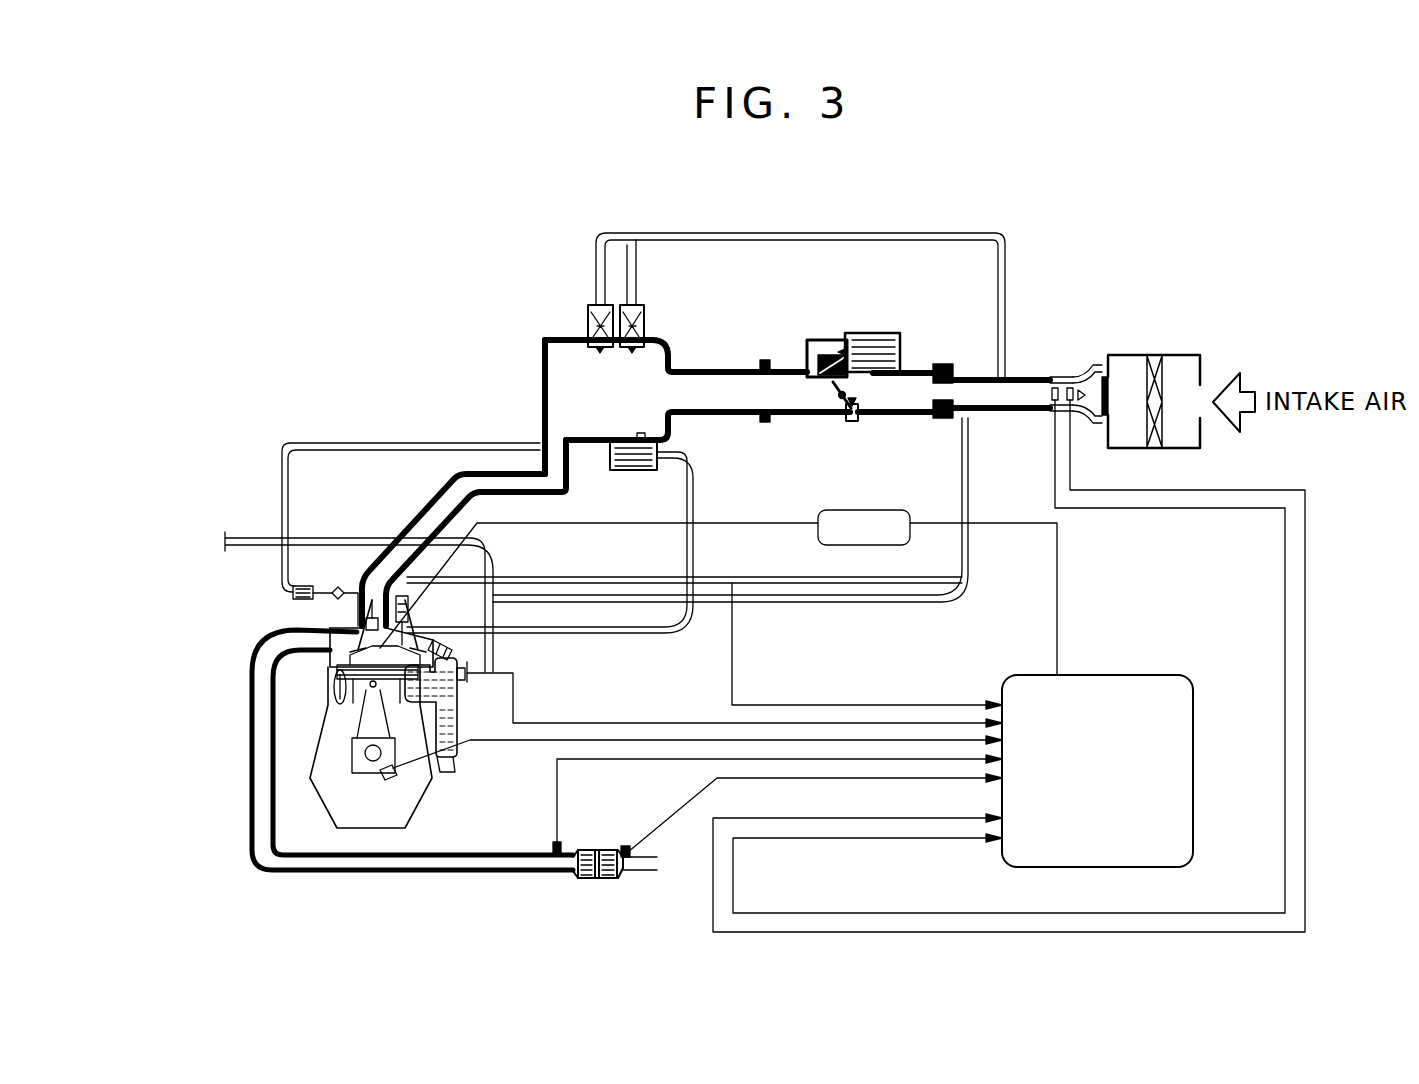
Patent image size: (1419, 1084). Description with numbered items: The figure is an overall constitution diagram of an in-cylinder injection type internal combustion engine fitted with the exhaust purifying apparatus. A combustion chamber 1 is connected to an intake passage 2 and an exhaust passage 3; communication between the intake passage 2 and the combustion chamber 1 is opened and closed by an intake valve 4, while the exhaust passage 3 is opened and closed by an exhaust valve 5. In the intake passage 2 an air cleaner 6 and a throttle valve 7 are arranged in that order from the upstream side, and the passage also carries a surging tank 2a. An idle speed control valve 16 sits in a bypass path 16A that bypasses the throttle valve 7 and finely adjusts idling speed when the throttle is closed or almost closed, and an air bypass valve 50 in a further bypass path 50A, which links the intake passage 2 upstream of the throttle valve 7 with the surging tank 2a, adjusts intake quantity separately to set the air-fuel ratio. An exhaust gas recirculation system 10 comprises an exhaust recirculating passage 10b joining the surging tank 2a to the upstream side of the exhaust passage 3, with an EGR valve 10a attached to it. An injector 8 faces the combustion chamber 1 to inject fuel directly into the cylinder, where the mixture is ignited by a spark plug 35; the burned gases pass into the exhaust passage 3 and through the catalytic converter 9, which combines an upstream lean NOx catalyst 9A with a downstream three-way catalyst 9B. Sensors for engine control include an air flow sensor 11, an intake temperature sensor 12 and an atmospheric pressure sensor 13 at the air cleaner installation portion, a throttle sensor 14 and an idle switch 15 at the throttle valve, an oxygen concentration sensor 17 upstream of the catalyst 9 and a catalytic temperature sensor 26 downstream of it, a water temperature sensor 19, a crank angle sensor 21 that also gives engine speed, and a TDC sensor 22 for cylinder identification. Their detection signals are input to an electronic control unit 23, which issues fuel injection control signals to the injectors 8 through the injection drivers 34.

The combustion chamber 1 is at (327, 683).
The intake passage 2 is at (437, 505).
The surging tank 2a is at (563, 385).
The exhaust passage 3 is at (346, 872).
The intake valve 4 is at (338, 690).
The exhaust valve 5 is at (300, 628).
The air cleaner 6 is at (1177, 355).
The throttle valve 7 is at (830, 406).
The injector 8 is at (460, 648).
The catalytic converter 9 is at (616, 889).
The lean NOx catalyst 9A is at (583, 880).
The three-way catalyst 9B is at (628, 878).
The exhaust gas recirculation system 10 is at (692, 554).
The EGR valve 10a is at (620, 470).
The exhaust recirculating passage 10b is at (694, 494).
The air flow sensor 11 is at (1071, 386).
The intake temperature sensor 12 is at (1055, 385).
The atmospheric pressure sensor 13 is at (1110, 354).
The throttle sensor 14 is at (856, 404).
The idle switch 15 is at (901, 429).
The idle speed control valve 16 is at (856, 333).
The bypass path 16A is at (822, 348).
The oxygen concentration sensor 17 is at (553, 847).
The water temperature sensor 19 is at (475, 682).
The crank angle sensor 21 is at (393, 778).
The TDC sensor 22 is at (405, 592).
The electronic control unit 23 is at (1120, 675).
The catalytic temperature sensor 26 is at (625, 845).
The injection driver 34 is at (863, 546).
The spark plug 35 is at (372, 625).
The air bypass valve 50 is at (645, 306).
The bypass path 50A is at (802, 233).